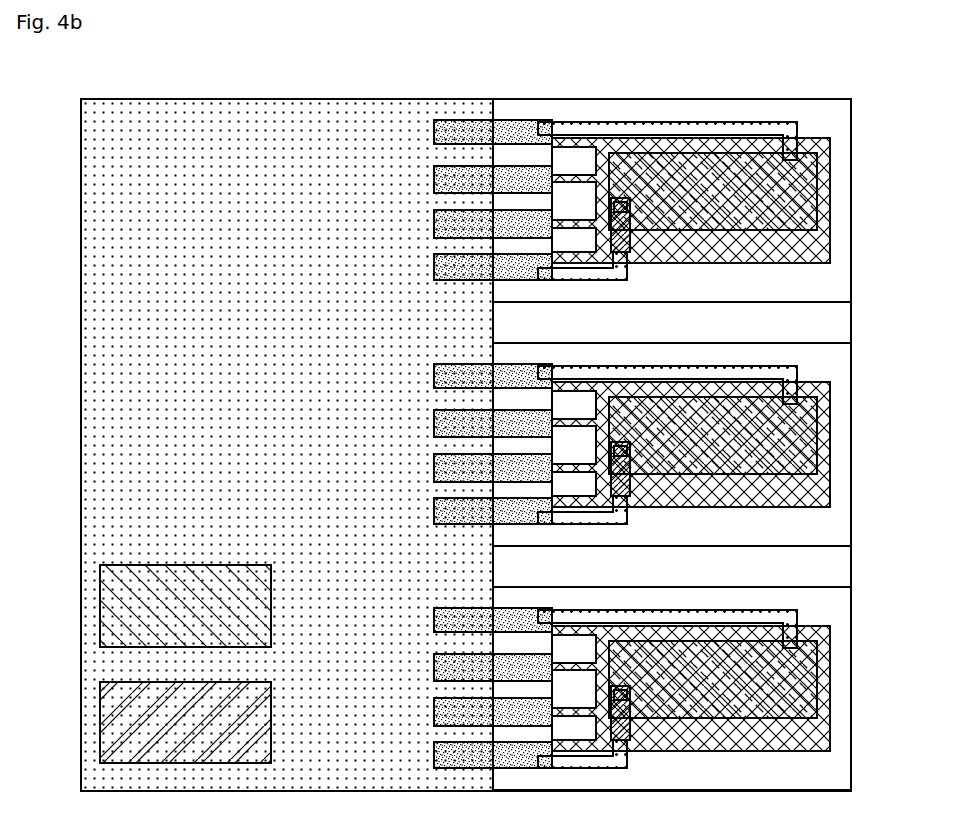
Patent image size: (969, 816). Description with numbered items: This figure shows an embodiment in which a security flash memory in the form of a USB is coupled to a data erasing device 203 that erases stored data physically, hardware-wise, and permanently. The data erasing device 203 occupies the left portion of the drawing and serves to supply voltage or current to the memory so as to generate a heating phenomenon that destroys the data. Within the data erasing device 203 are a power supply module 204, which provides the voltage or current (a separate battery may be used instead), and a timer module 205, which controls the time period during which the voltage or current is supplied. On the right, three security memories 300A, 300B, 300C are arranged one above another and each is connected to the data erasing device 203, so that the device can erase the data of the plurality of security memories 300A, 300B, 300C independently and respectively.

The data erasing device 203 is at (110, 386).
The power supply module 204 is at (115, 605).
The timer module 205 is at (113, 722).
The security memory 300A is at (853, 99).
The security memory 300B is at (683, 444).
The security memory 300C is at (683, 688).